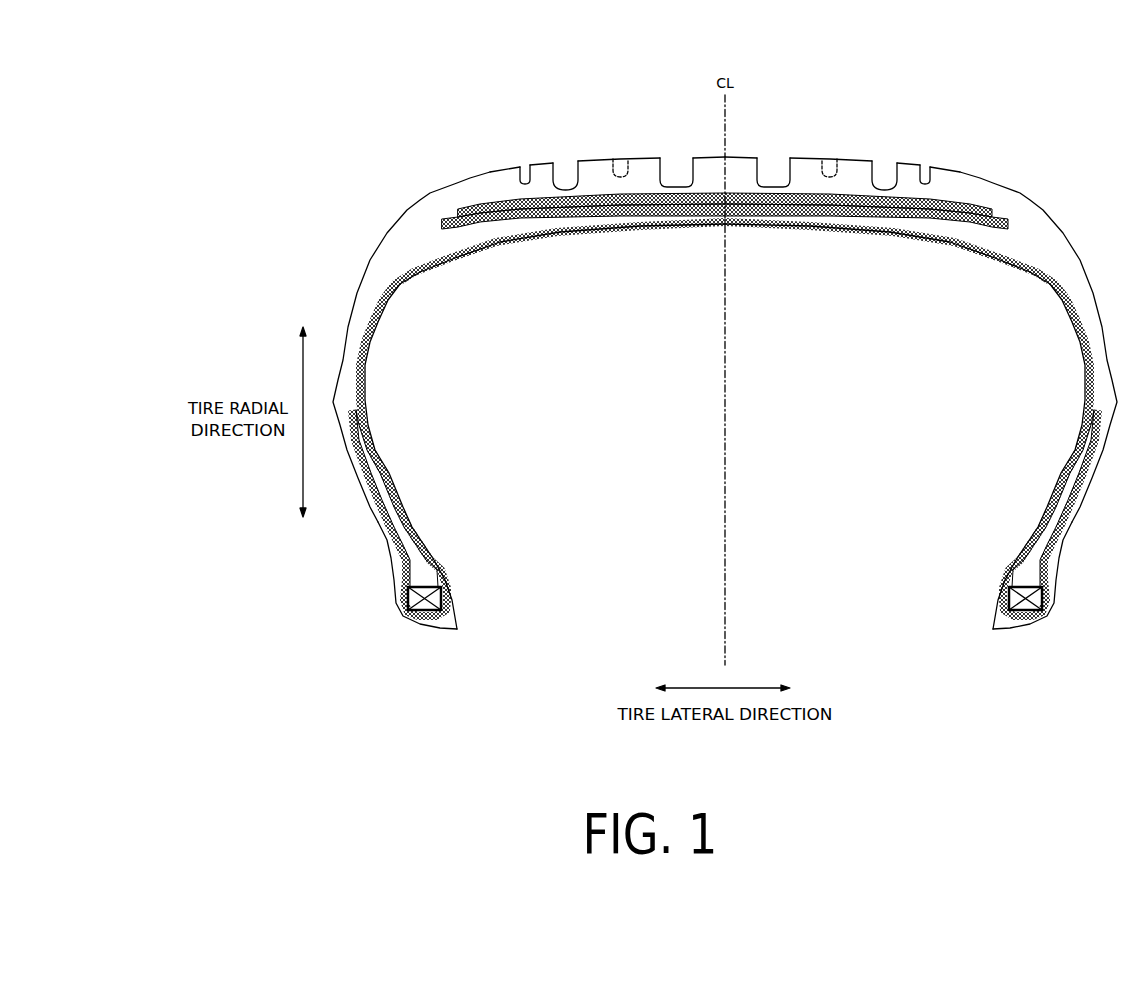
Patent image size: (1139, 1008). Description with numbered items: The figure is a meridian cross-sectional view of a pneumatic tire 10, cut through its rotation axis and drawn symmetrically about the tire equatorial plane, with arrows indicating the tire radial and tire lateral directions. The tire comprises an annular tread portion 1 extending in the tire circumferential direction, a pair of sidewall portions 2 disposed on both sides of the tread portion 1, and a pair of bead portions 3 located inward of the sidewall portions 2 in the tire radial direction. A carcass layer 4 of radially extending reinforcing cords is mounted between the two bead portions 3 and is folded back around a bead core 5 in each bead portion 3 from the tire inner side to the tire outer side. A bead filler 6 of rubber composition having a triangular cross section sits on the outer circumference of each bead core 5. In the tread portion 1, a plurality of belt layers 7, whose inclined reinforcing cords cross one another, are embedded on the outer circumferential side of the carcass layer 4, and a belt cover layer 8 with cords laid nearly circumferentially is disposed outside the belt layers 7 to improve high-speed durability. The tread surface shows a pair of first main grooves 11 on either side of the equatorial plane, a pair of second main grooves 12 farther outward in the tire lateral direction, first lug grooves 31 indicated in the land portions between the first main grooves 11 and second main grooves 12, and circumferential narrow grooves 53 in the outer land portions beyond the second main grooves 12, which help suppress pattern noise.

The pneumatic tire 10 is at (479, 110).
The tread portion 1 is at (860, 158).
The sidewall portion 2 is at (373, 250).
The bead portion 3 is at (396, 578).
The carcass layer 4 is at (1060, 302).
The bead core 5 is at (455, 601).
The bead filler 6 is at (423, 556).
The belt layer 7 is at (924, 229).
The belt cover layer 8 is at (982, 222).
The first main groove 11 is at (668, 183).
The second main groove 12 is at (559, 184).
The first lug groove 31 is at (620, 172).
The circumferential narrow groove 53 is at (527, 179).